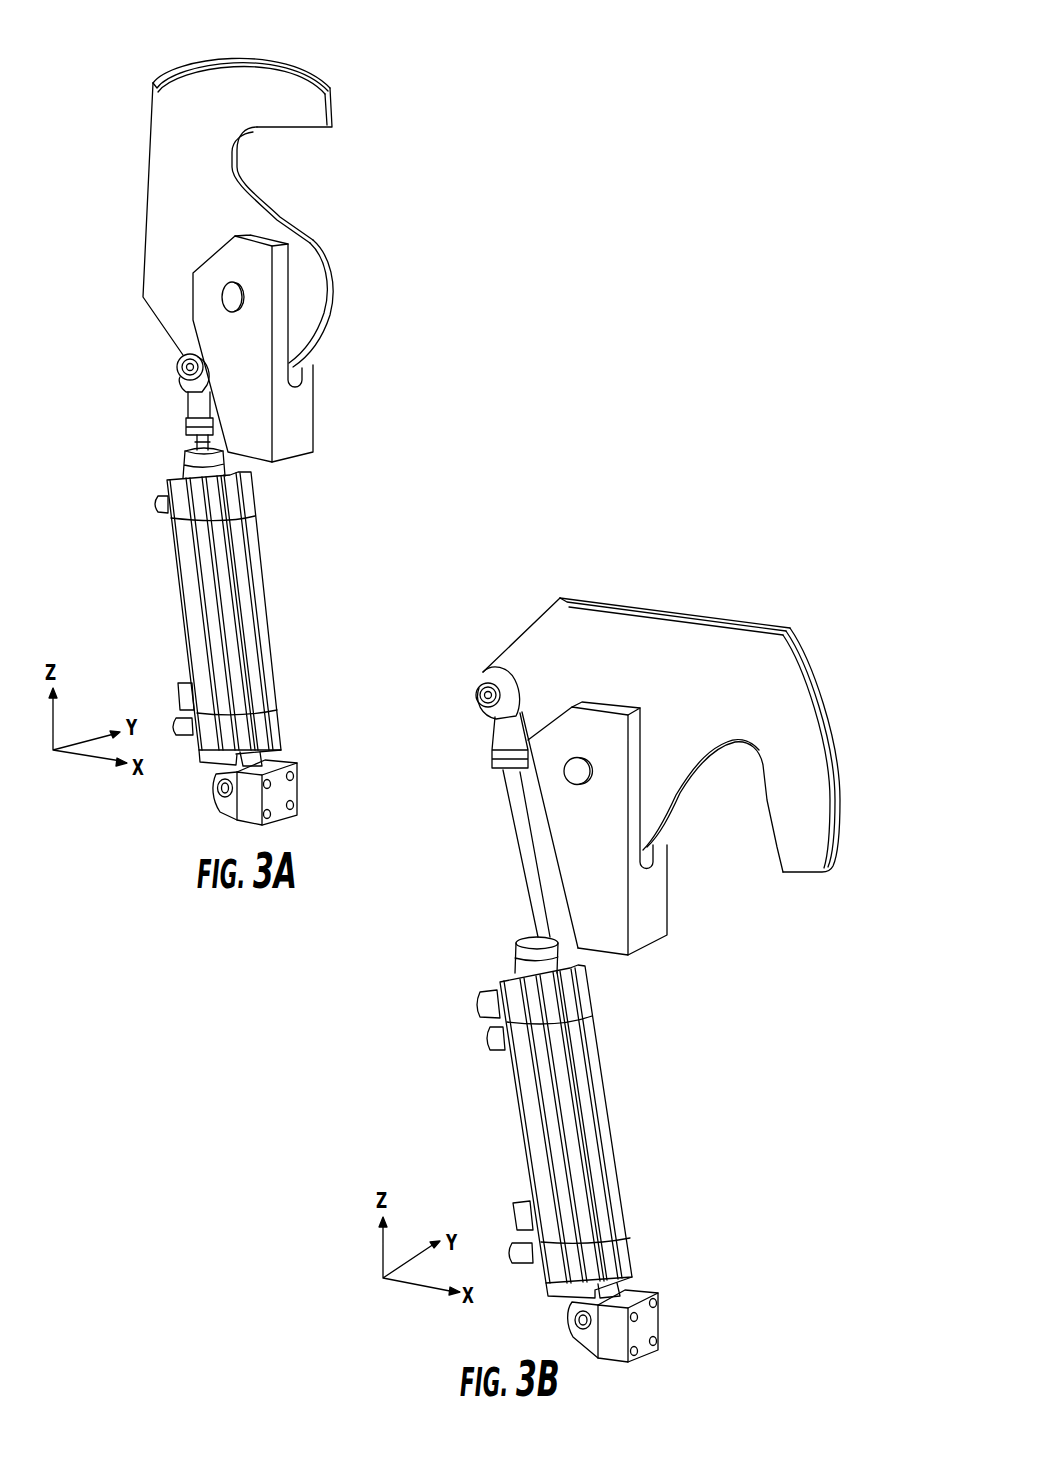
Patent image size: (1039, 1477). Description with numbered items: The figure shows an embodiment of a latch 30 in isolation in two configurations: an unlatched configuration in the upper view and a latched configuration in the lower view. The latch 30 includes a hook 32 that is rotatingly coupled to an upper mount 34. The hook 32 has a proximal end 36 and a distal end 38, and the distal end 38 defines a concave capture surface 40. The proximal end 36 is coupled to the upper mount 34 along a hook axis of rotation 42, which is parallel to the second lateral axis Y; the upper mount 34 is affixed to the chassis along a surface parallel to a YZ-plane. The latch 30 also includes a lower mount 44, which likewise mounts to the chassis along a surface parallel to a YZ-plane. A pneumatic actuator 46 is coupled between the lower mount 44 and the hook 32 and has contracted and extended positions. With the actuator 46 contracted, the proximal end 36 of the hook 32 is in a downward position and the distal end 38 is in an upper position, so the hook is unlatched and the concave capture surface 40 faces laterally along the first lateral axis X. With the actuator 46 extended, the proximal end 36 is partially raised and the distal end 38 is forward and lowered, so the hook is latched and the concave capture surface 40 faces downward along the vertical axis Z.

In FIG. 3A, the latch 30 is at (373, 101).
In FIG. 3B, the latch 30 is at (817, 617).
In FIG. 3A, the hook 32 is at (163, 192).
In FIG. 3B, the hook 32 is at (663, 642).
In FIG. 3A, the upper mount 34 is at (257, 425).
In FIG. 3B, the upper mount 34 is at (597, 902).
In FIG. 3A, the proximal end 36 is at (155, 282).
In FIG. 3B, the proximal end 36 is at (532, 665).
In FIG. 3A, the distal end 38 is at (230, 70).
In FIG. 3B, the distal end 38 is at (813, 823).
In FIG. 3A, the concave capture surface 40 is at (240, 163).
In FIG. 3B, the concave capture surface 40 is at (737, 747).
In FIG. 3A, the hook axis of rotation 42 is at (235, 295).
In FIG. 3B, the hook axis of rotation 42 is at (573, 775).
In FIG. 3A, the lower mount 44 is at (290, 792).
In FIG. 3B, the lower mount 44 is at (648, 1323).
In FIG. 3A, the pneumatic actuator 46 is at (243, 632).
In FIG. 3B, the pneumatic actuator 46 is at (600, 1145).